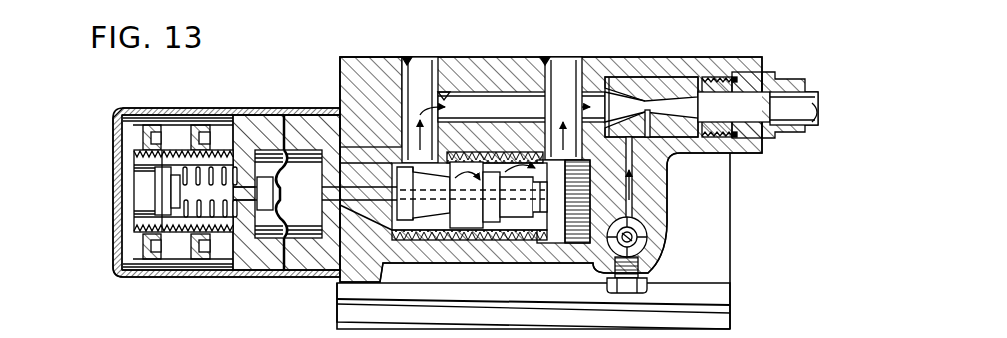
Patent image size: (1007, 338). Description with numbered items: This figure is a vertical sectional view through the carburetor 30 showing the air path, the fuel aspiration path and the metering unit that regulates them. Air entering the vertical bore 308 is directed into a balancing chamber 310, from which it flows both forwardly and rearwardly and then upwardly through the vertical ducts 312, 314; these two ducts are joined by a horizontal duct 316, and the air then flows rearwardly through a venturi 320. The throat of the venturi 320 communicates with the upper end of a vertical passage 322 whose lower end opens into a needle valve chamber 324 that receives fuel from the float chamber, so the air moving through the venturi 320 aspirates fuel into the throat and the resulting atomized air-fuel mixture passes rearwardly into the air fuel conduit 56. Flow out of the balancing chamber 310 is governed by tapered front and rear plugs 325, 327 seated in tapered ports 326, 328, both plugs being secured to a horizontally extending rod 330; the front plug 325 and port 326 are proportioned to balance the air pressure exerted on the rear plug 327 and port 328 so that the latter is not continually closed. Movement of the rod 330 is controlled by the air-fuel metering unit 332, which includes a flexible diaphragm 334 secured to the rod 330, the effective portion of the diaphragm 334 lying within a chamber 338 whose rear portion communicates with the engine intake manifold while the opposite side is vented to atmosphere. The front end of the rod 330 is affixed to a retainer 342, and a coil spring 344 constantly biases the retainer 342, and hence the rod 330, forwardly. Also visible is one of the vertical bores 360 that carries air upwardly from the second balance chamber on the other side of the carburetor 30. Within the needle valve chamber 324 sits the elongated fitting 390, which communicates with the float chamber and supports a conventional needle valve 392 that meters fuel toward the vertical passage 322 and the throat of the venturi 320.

The carburetor 30 is at (371, 55).
The air fuel conduit 56 is at (817, 92).
The vertical bore 308 is at (512, 107).
The balancing chamber 310 is at (471, 225).
The vertical duct 312 is at (412, 75).
The vertical duct 314 is at (549, 78).
The horizontal duct 316 is at (450, 93).
The venturi 320 is at (633, 100).
The vertical passage 322 is at (633, 165).
The needle valve chamber 324 is at (648, 240).
The tapered front plug 325 is at (431, 214).
The tapered port 326 is at (446, 225).
The tapered rear plug 327 is at (520, 212).
The tapered port 328 is at (540, 218).
The rod 330 is at (359, 198).
The air-fuel metering unit 332 is at (112, 229).
The flexible diaphragm 334 is at (287, 142).
The chamber 338 is at (306, 218).
The retainer 342 is at (155, 181).
The coil spring 344 is at (188, 214).
The vertical bore 360 is at (184, 191).
The elongated fitting 390 is at (645, 284).
The needle valve 392 is at (639, 263).